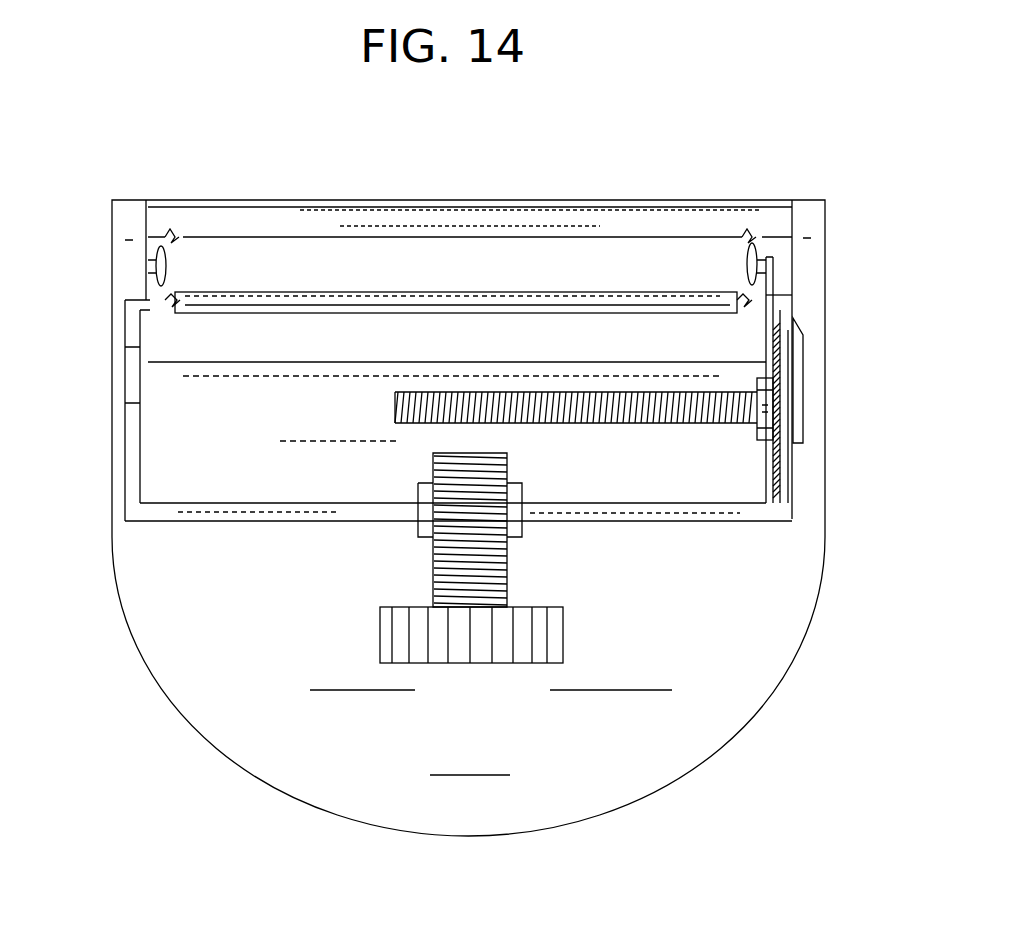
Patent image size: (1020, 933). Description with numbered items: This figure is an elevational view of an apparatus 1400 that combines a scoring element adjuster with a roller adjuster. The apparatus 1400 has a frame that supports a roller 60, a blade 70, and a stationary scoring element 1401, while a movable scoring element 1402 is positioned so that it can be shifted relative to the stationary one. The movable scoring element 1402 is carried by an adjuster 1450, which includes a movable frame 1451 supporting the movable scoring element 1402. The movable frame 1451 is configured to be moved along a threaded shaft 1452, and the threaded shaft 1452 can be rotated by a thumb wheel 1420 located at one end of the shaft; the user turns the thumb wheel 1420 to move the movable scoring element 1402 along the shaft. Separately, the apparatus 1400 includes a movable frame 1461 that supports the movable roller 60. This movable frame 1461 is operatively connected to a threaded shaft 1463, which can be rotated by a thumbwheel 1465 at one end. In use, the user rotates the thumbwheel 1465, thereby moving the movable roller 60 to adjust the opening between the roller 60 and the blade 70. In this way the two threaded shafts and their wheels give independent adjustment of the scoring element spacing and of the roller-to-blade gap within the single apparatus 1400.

The apparatus 1400 is at (790, 136).
The stationary scoring element 1401 is at (175, 262).
The movable scoring element 1402 is at (755, 242).
The blade 70 is at (492, 212).
The roller 60 is at (183, 305).
The movable frame 1461 is at (130, 318).
The movable frame 1451 is at (800, 350).
The thumb wheel 1420 is at (783, 410).
The threaded shaft 1452 is at (395, 410).
The adjuster 1450 is at (655, 442).
The threaded shaft 1463 is at (505, 525).
The thumbwheel 1465 is at (500, 664).